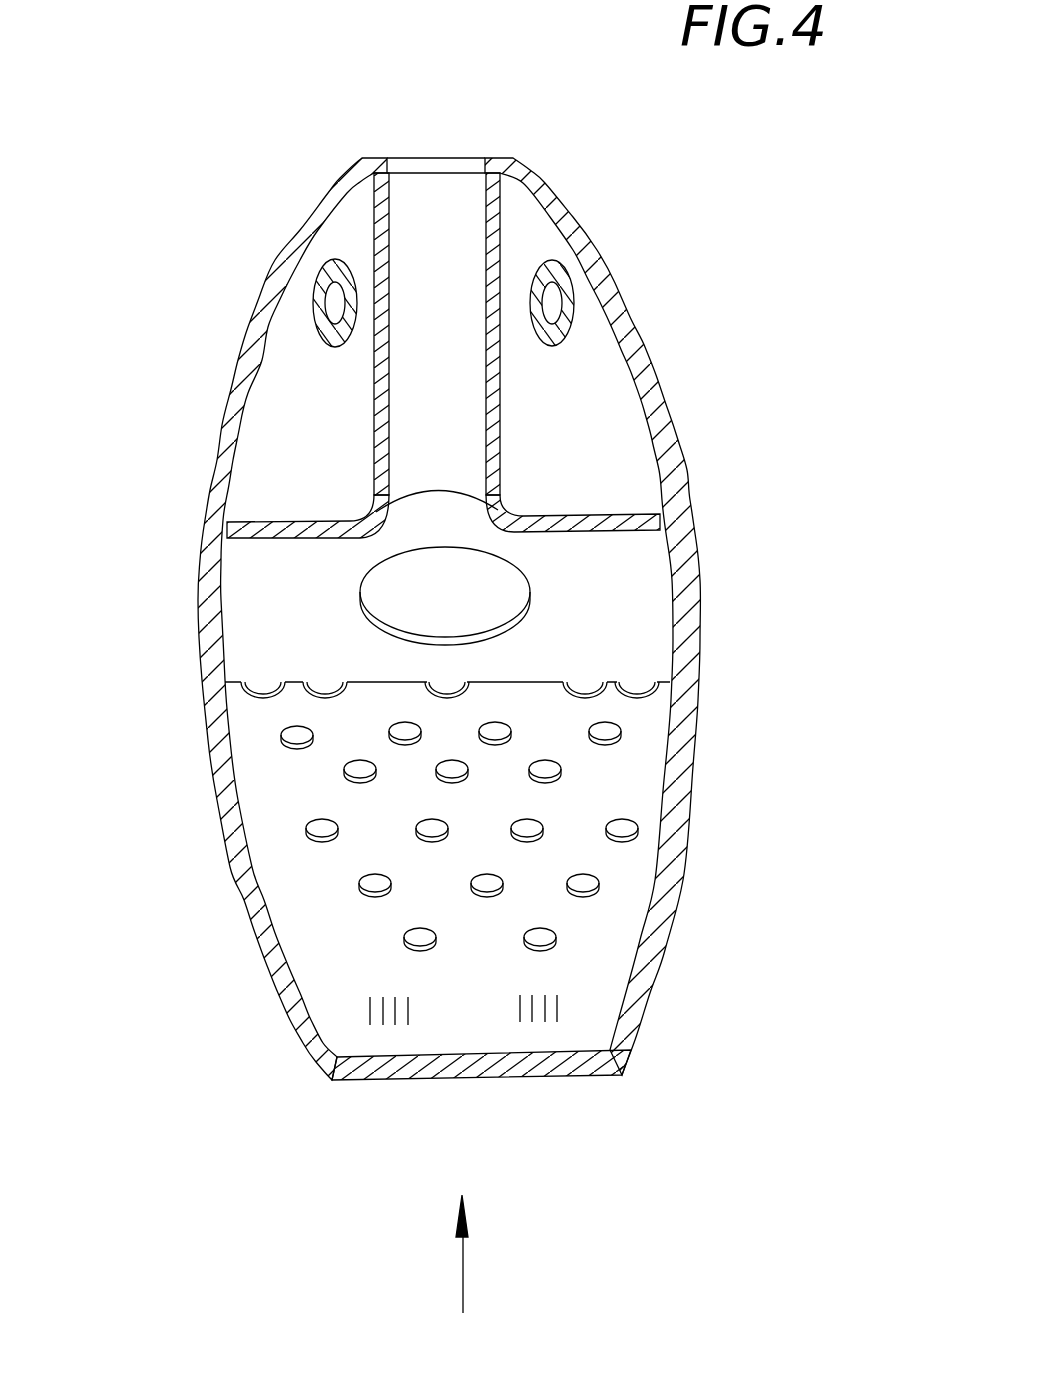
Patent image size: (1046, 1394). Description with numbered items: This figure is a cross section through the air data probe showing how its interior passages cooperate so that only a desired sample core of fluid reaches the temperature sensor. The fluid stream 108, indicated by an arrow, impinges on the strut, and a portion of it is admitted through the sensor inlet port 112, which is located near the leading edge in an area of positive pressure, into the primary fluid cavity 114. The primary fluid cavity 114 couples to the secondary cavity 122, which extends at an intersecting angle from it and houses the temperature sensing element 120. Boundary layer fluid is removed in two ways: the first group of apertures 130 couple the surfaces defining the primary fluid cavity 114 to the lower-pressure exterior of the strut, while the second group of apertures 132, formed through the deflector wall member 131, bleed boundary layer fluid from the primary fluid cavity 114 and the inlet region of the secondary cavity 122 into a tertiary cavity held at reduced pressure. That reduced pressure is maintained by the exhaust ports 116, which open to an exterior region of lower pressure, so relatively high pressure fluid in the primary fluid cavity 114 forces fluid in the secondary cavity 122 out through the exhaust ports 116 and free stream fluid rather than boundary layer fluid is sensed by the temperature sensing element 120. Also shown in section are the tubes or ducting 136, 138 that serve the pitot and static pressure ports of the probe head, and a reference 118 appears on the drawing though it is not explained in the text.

The fluid stream 108 is at (463, 1260).
The sensor inlet port 112 is at (590, 1110).
The primary fluid cavity 114 is at (458, 396).
The sensor fluid exhaust port 116 is at (172, 570).
The top opening 118 is at (475, 138).
The temperature sensing element 120 is at (470, 607).
The secondary cavity 122 is at (620, 635).
The first group of apertures 130 is at (682, 858).
The deflector wall member 131 is at (255, 738).
The second group of apertures 132 is at (360, 882).
The tube or ducting 136 is at (570, 278).
The tube or ducting 138 is at (318, 275).